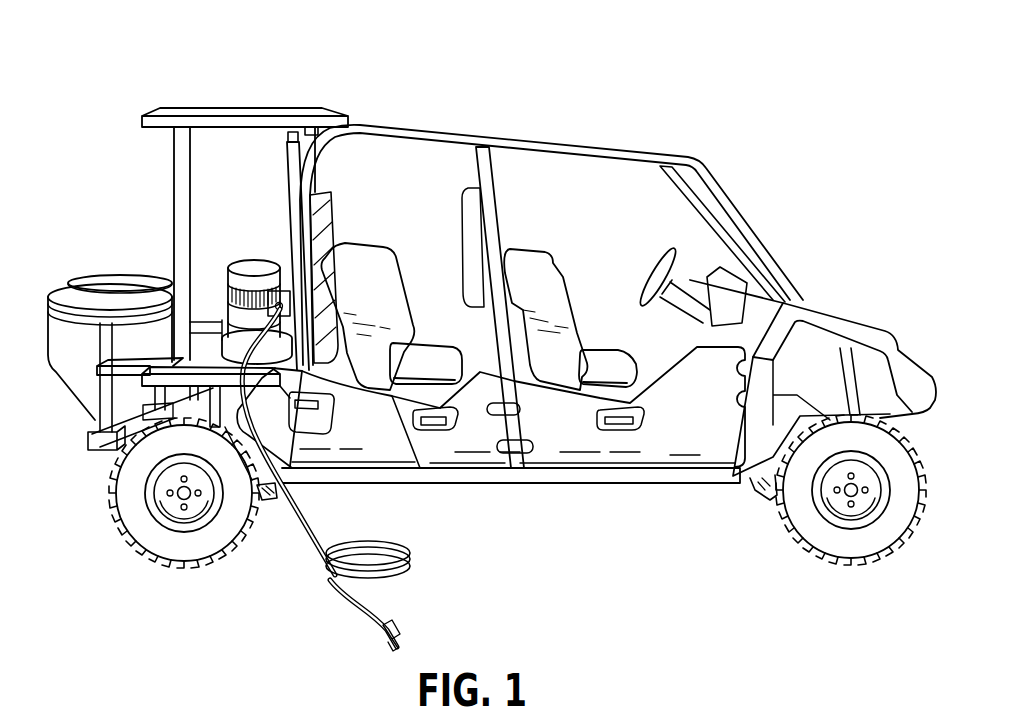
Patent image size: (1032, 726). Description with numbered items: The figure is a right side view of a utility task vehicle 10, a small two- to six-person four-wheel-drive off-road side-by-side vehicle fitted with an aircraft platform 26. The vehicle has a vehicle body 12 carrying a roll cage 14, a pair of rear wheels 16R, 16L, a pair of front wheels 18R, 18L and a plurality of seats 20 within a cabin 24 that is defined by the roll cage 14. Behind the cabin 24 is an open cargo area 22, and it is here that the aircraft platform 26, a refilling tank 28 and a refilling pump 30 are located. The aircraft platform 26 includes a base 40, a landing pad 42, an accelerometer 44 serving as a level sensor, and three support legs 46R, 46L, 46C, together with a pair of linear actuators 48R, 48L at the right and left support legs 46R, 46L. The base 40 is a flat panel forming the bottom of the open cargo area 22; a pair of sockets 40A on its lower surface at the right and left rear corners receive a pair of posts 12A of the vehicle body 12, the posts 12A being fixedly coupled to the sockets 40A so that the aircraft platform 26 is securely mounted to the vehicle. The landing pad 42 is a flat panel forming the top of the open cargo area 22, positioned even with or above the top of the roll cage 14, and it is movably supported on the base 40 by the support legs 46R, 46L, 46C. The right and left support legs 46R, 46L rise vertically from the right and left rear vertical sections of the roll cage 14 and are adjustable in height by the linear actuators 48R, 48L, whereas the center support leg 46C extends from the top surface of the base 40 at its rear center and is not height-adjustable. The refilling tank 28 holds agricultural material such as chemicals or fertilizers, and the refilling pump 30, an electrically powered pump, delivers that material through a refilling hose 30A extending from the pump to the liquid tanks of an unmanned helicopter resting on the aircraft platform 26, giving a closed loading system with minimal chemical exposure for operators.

The utility task vehicle 10 is at (815, 132).
The vehicle body 12 is at (893, 315).
The posts 12A is at (147, 420).
The roll cage 14 is at (593, 143).
The rear wheel 16R is at (202, 542).
The rear wheel 16L is at (267, 500).
The front wheel 18R is at (870, 540).
The front wheel 18L is at (760, 490).
The seats 20 is at (393, 242).
The open cargo area 22 is at (251, 332).
The cabin 24 is at (527, 192).
The aircraft platform 26 is at (244, 191).
The refilling tank 28 is at (52, 268).
The refilling pump 30 is at (238, 250).
The refilling hose 30A is at (393, 542).
The base 40 is at (206, 355).
The sockets 40A is at (157, 393).
The landing pad 42 is at (170, 115).
The accelerometer 44 is at (170, 358).
The center support leg 46C is at (173, 228).
The right support leg 46R is at (292, 163).
The left support leg 46L is at (323, 158).
The linear actuator 48R is at (275, 149).
The linear actuator 48L is at (308, 127).